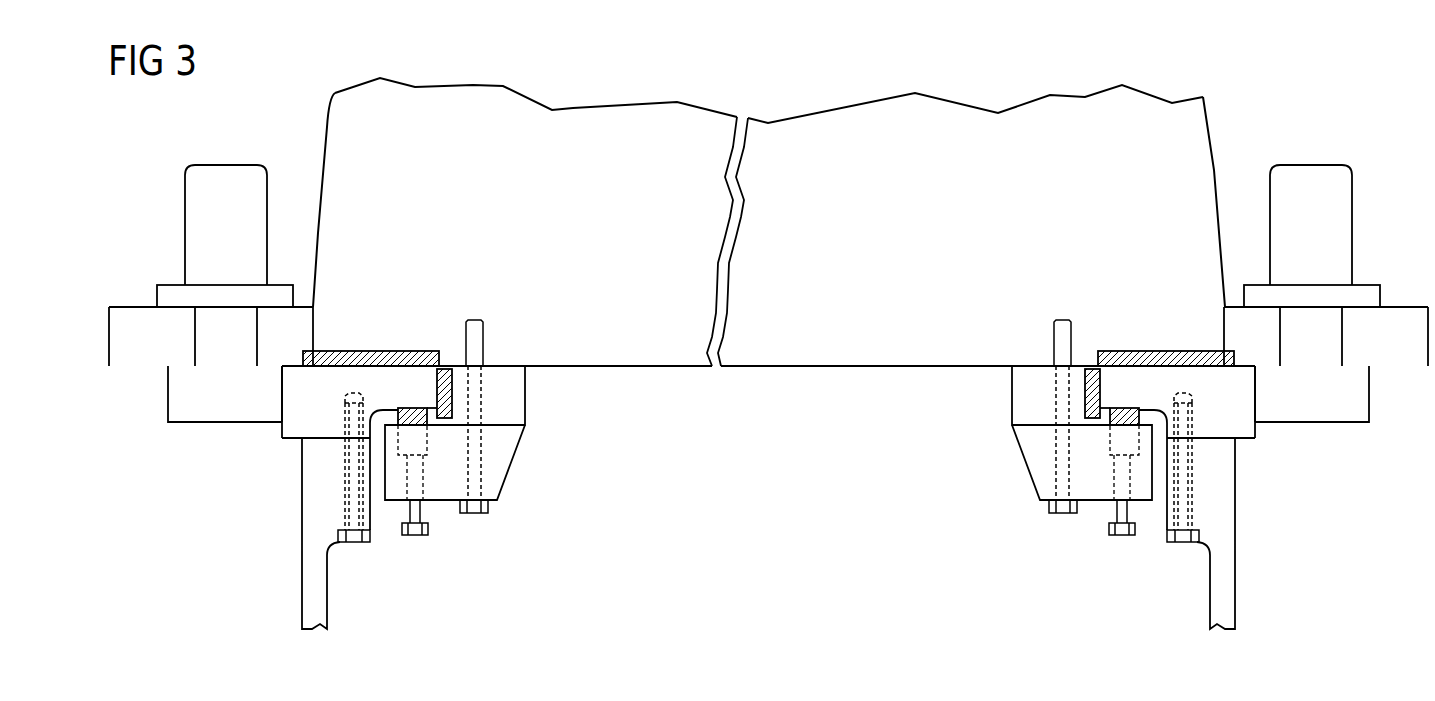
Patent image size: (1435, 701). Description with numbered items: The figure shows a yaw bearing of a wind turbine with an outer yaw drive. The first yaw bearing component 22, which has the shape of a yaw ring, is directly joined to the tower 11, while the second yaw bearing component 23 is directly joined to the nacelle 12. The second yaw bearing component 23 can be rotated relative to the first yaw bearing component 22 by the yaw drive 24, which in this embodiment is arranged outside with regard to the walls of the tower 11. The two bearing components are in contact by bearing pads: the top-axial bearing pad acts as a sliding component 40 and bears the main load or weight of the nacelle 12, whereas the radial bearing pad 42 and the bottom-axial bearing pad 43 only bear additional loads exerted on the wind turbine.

The tower 11 is at (312, 588).
The nacelle 12 is at (342, 323).
The first yaw bearing component 22 is at (295, 430).
The second yaw bearing component 23 is at (1210, 320).
The yaw drive 24 is at (180, 395).
The sliding component 40 is at (380, 362).
The radial bearing pad 42 is at (452, 390).
The bottom-axial bearing pad 43 is at (428, 418).